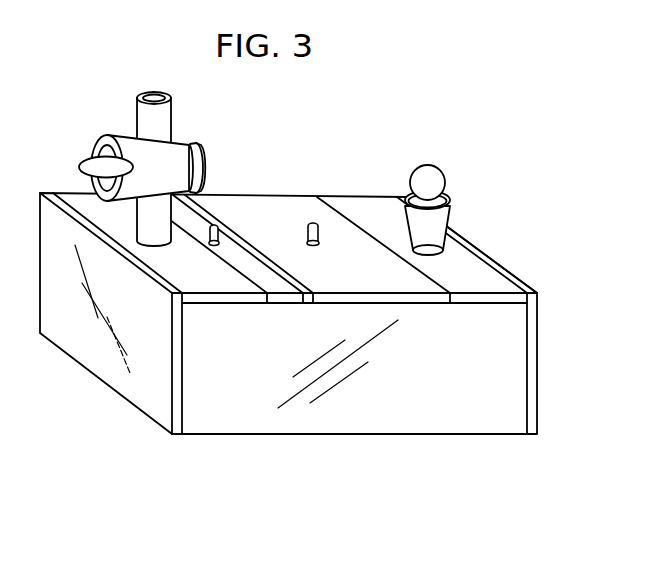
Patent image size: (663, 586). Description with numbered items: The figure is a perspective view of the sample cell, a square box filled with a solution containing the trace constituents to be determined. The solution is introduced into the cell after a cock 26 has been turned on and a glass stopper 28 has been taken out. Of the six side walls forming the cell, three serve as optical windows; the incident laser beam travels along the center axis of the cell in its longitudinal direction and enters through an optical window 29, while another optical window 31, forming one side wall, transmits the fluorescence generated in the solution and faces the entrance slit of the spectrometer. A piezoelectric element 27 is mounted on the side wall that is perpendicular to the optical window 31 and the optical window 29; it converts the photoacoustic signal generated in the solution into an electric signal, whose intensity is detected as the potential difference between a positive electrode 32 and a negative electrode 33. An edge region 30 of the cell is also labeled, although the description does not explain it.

The cock 26 is at (113, 136).
The piezoelectric element 27 is at (297, 195).
The glass stopper 28 is at (441, 169).
The optical window 29 is at (170, 431).
The right rim edge 30 is at (535, 291).
The optical window 31 is at (215, 425).
The positive electrode 32 is at (216, 224).
The negative electrode 33 is at (308, 226).